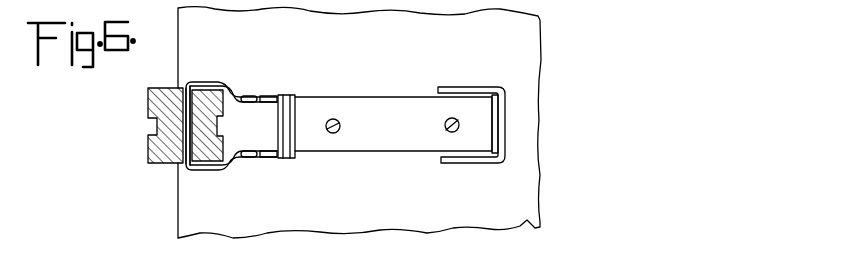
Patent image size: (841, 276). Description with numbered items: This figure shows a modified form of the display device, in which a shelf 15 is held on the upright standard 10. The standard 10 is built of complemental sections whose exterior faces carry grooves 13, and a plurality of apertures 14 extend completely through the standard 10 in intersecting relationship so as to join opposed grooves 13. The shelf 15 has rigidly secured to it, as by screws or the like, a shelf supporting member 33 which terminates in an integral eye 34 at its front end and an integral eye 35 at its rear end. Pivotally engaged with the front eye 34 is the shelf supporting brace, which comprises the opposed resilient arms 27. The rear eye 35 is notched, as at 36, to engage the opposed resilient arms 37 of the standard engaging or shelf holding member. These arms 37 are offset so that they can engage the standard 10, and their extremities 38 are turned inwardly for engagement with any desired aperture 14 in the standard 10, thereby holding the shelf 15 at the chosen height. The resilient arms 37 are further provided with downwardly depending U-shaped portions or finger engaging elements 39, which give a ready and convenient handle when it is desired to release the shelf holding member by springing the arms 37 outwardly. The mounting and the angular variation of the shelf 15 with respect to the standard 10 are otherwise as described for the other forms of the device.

The standard 10 is at (330, 138).
The groove 13 is at (154, 124).
The aperture 14 is at (191, 127).
The shelf 15 is at (528, 220).
The opposed resilient arms 27 is at (482, 90).
The shelf supporting member 33 is at (360, 105).
The eye 34 is at (500, 123).
The eye 35 is at (288, 133).
The notch 36 is at (273, 95).
The resilient arms 37 is at (267, 150).
The extremities 38 is at (186, 100).
The finger engaging elements 39 is at (247, 96).